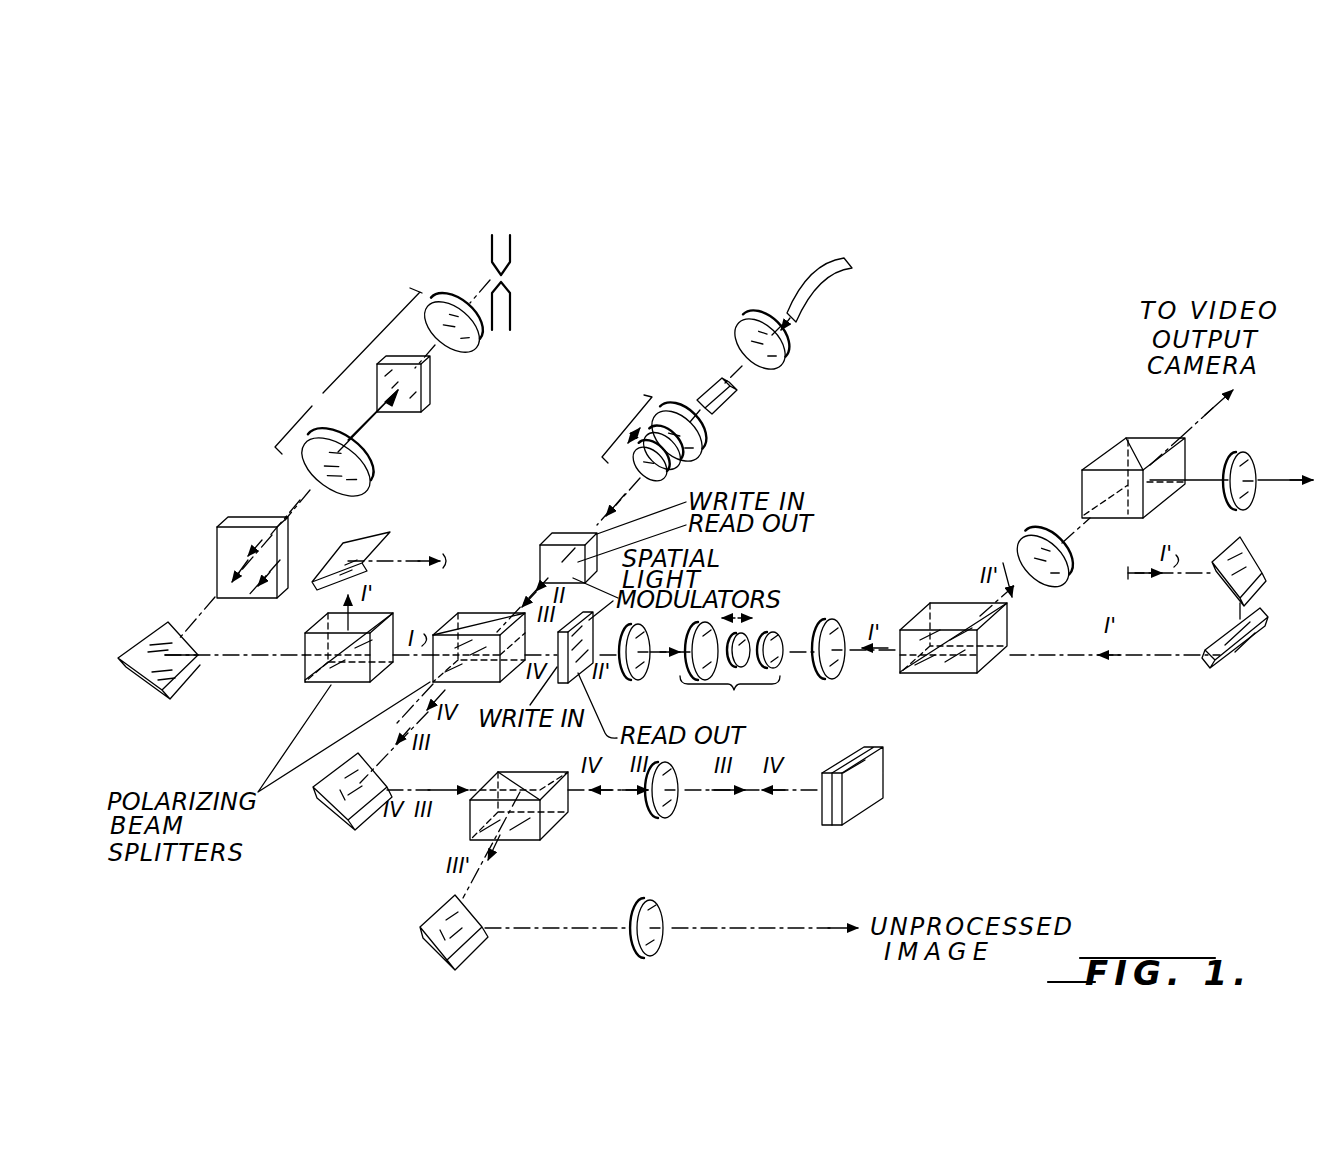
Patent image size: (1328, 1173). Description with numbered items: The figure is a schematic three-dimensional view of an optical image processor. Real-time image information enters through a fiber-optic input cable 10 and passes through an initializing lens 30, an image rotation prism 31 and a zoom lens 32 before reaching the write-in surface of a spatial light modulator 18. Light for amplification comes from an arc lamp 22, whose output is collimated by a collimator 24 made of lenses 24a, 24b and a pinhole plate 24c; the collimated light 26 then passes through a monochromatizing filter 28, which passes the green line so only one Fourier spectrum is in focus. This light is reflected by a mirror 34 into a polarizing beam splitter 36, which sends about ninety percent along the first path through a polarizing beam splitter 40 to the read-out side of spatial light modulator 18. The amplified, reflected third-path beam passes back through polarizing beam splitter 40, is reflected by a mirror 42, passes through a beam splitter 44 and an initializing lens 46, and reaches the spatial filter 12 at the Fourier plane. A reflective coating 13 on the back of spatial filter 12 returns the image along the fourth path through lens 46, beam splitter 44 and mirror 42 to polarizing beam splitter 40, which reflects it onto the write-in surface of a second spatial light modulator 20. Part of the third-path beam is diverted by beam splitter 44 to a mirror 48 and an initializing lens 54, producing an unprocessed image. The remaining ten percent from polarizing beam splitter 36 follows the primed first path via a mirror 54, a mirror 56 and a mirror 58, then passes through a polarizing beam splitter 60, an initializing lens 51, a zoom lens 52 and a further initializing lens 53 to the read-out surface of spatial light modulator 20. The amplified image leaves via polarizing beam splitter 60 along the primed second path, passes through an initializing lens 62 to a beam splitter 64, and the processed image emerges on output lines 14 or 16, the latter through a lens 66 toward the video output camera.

The fiber-optic input cable 10 is at (857, 270).
The spatial filter 12 is at (822, 800).
The reflective coating 13 is at (860, 793).
The output line 14 is at (1220, 393).
The output line 16 is at (1205, 487).
The spatial light modulator 18 is at (540, 553).
The spatial light modulator 20 is at (603, 616).
The arc lamp 22 is at (516, 311).
The collimator 24 is at (347, 369).
The lens 24a is at (480, 345).
The lens 24b is at (329, 436).
The pinhole plate 24c is at (408, 418).
The collimated light 26 is at (300, 512).
The monochromatizing filter 28 is at (215, 542).
The initializing lens 30 is at (787, 353).
The image rotation prism 31 is at (726, 404).
The zoom lens 32 is at (626, 424).
The mirror 34 is at (162, 692).
The polarizing beam splitter 36 is at (402, 618).
The polarizing beam splitter 40 is at (492, 598).
The mirror 42 is at (330, 817).
The beam splitter 44 is at (553, 810).
The initializing lens 46 is at (682, 800).
The mirror 48 is at (430, 943).
The initializing lens 51 is at (856, 604).
The zoom lens 52 is at (783, 669).
The initializing lens 53 is at (630, 685).
The initializing lens 54 is at (430, 524).
The mirror 56 is at (1220, 592).
The mirror 58 is at (1271, 668).
The polarizing beam splitter 60 is at (1000, 663).
The initializing lens 62 is at (1046, 534).
The beam splitter 64 is at (1082, 470).
The lens 66 is at (1255, 505).